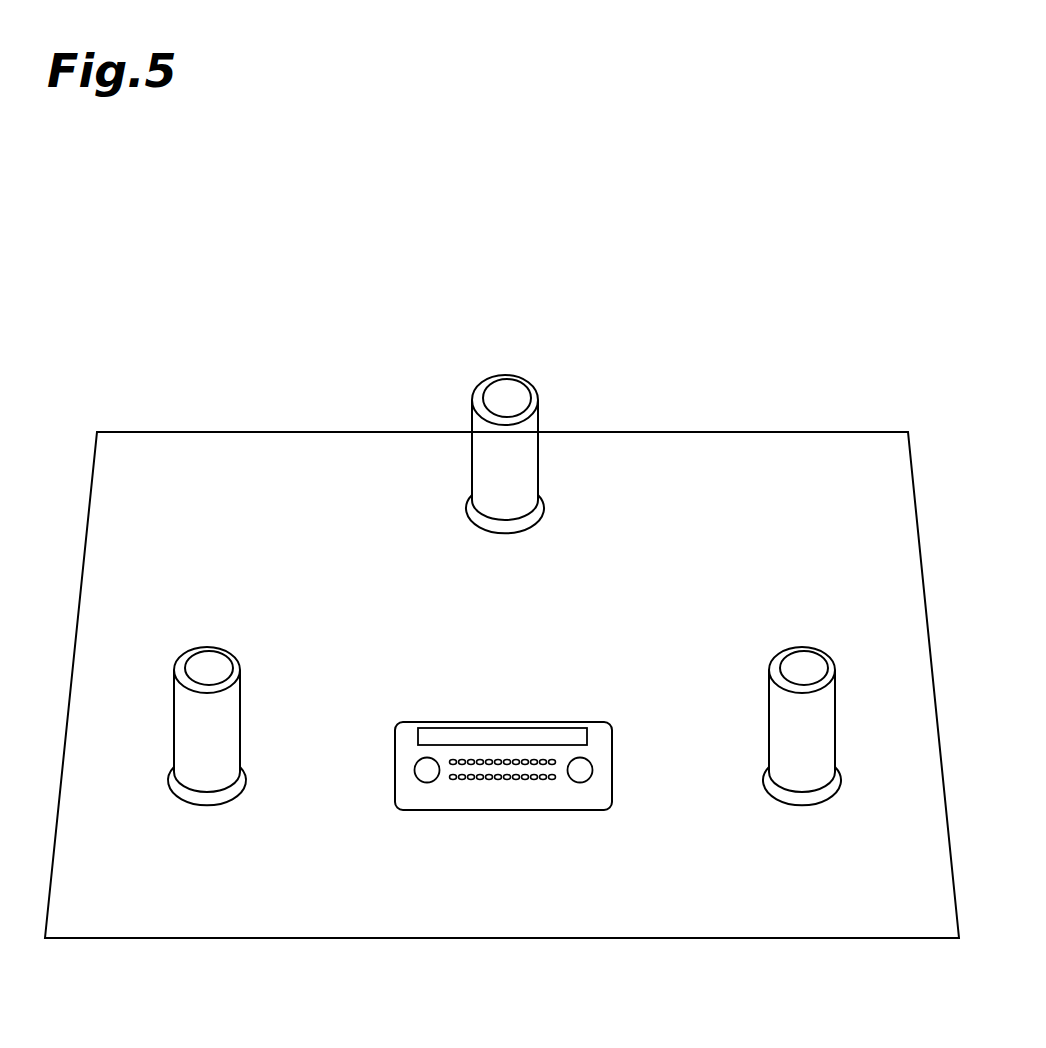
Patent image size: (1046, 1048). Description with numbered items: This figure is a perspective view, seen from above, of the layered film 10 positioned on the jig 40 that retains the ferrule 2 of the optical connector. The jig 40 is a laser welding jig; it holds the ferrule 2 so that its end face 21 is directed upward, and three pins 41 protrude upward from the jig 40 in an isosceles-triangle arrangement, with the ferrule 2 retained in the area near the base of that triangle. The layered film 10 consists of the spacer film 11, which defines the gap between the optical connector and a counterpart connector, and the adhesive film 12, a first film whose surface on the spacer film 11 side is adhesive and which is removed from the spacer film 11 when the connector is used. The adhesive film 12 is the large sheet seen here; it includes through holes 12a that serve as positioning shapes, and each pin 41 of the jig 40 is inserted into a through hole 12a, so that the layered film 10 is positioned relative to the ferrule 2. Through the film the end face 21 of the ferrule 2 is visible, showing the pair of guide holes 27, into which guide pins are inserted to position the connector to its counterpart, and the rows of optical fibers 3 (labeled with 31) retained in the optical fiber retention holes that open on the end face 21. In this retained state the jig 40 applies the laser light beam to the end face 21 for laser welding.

The layered film 10 is at (585, 937).
The adhesive film 12 is at (675, 928).
The through hole 12a is at (536, 507).
The jig 40 is at (820, 317).
The pin 41 is at (503, 388).
The ferrule 2 is at (537, 811).
The end face 21 is at (440, 805).
The spacer film 11 is at (500, 737).
The guide hole 27 is at (423, 783).
The optical fiber 3 is at (490, 874).
The terminal contacts 31 is at (500, 780).